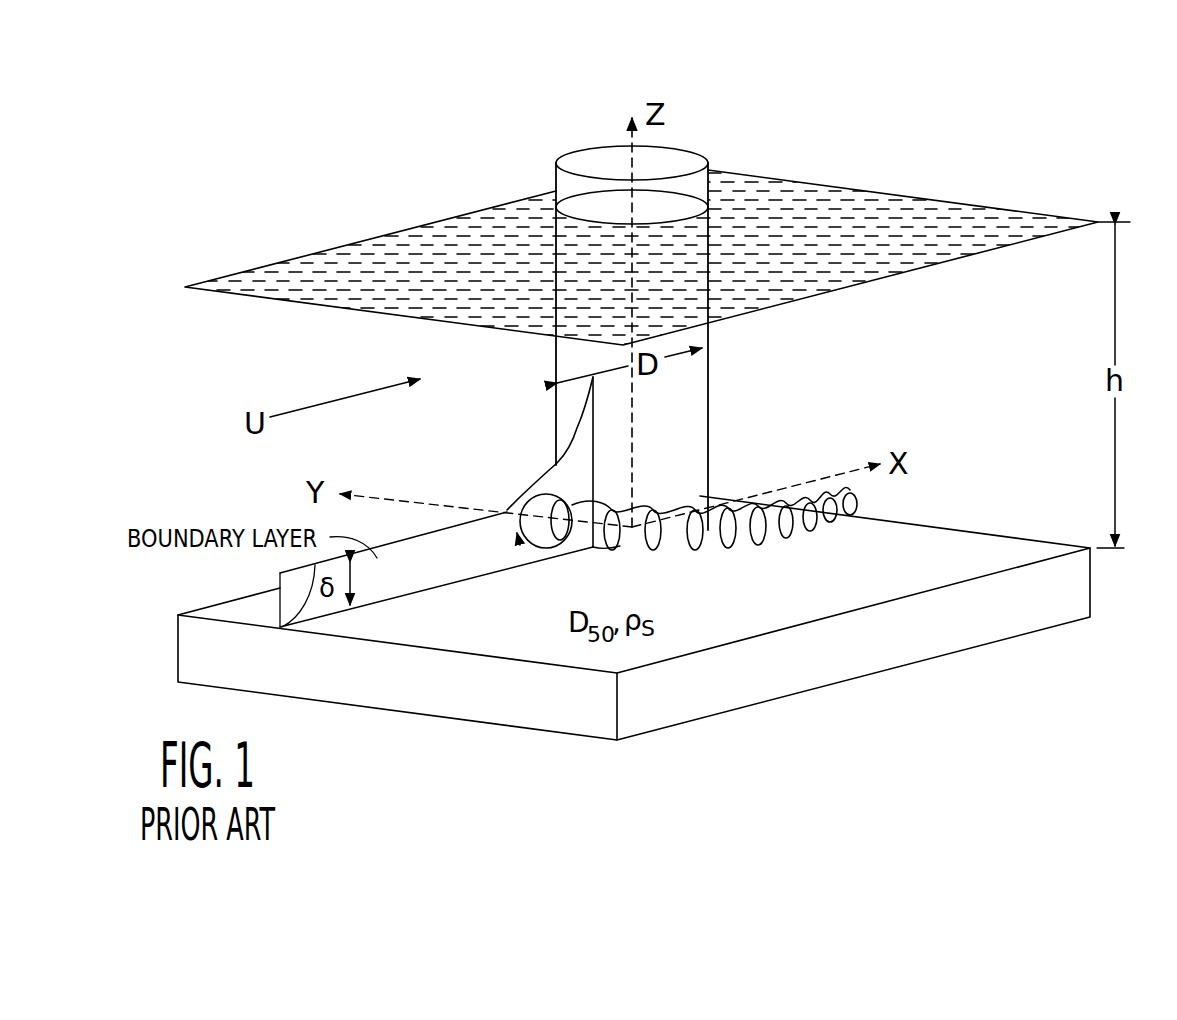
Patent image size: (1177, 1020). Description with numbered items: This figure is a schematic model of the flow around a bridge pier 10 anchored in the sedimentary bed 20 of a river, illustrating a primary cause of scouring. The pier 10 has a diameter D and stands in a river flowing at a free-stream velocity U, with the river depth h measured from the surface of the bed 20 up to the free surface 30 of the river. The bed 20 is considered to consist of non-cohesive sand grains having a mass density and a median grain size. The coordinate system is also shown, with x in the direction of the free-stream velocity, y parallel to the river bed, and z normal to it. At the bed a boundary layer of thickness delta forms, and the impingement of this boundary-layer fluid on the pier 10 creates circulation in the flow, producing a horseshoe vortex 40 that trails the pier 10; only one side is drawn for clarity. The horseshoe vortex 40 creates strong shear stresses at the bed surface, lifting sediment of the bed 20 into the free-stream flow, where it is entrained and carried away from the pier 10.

The bridge pier 10 is at (690, 432).
The sedimentary bed 20 is at (1080, 590).
The free surface 30 is at (930, 198).
The horseshoe vortex 40 is at (860, 488).